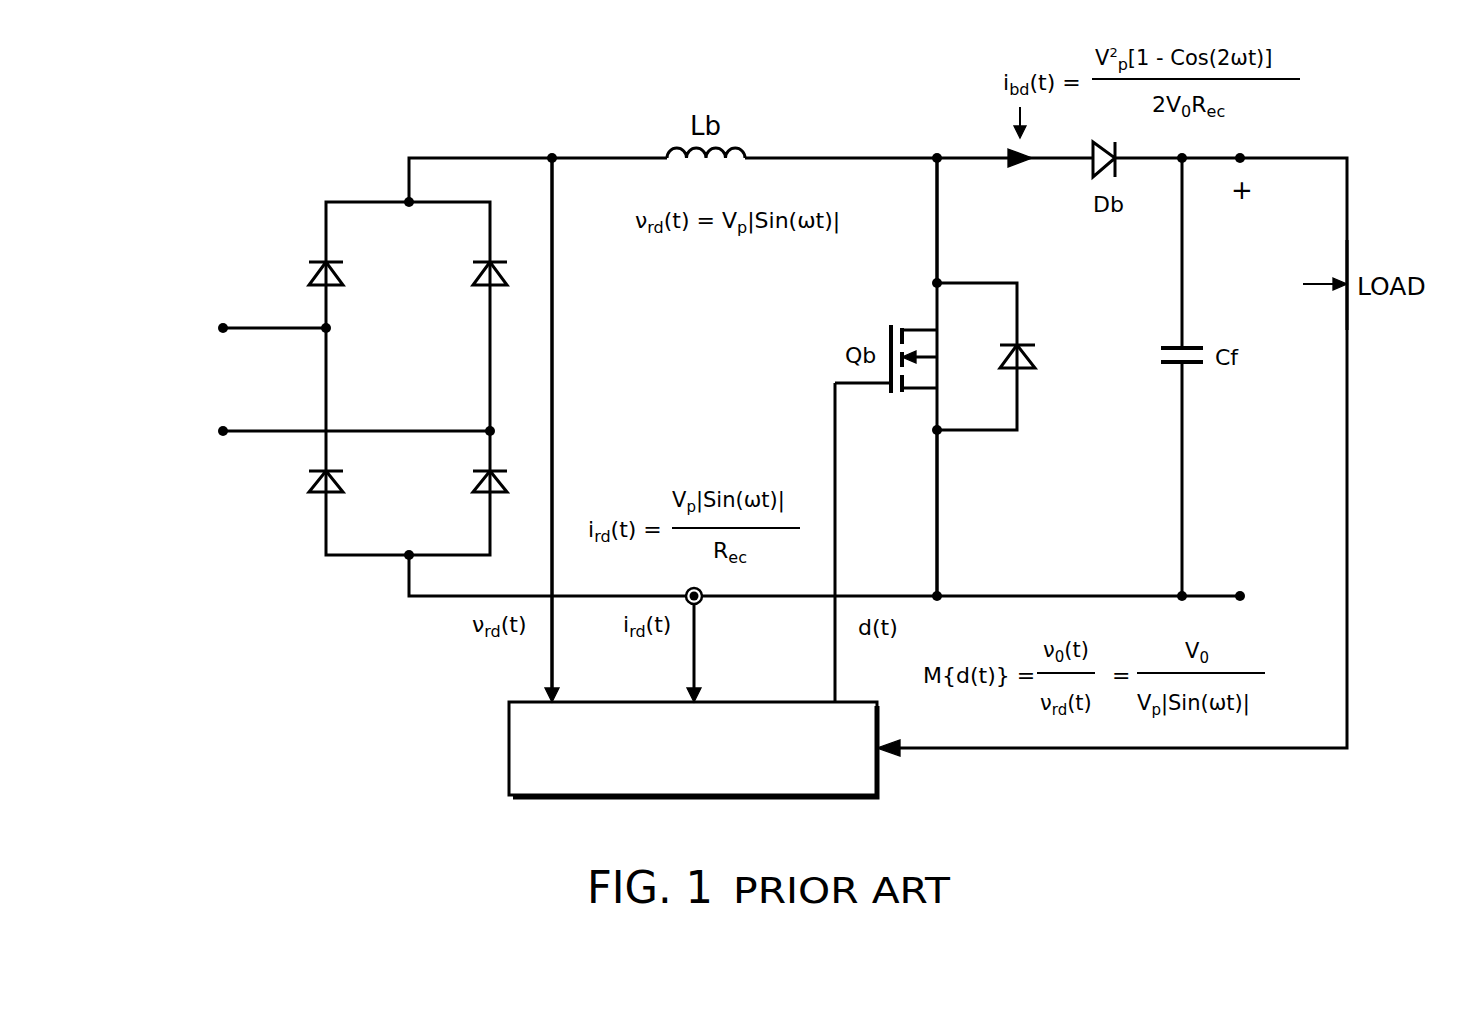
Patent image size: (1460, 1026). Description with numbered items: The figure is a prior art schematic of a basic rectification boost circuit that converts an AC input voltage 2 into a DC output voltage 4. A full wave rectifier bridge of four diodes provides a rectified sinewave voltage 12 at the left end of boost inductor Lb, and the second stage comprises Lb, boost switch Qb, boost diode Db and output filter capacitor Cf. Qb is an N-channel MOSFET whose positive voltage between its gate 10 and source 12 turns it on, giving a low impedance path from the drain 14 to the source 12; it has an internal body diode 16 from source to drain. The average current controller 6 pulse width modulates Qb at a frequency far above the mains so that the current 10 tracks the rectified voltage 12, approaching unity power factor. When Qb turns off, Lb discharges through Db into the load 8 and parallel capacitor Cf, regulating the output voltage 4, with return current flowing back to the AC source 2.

The AC input voltage 2 is at (143, 362).
The DC output voltage 4 is at (1275, 232).
The average current controller 6 is at (509, 740).
The load 8 is at (1383, 305).
The gate / rectified current i_rd(t) 10 is at (694, 665).
The source / rectified sinewave voltage 12 is at (937, 500).
The drain 14 is at (937, 245).
The internal body diode 16 is at (1036, 356).